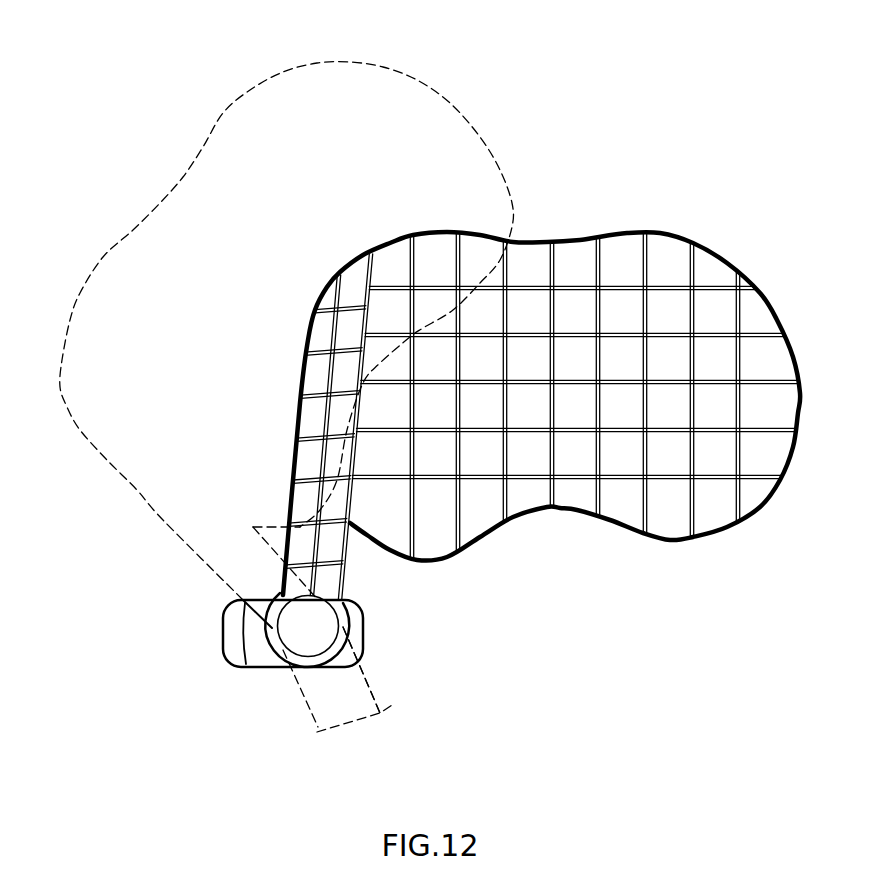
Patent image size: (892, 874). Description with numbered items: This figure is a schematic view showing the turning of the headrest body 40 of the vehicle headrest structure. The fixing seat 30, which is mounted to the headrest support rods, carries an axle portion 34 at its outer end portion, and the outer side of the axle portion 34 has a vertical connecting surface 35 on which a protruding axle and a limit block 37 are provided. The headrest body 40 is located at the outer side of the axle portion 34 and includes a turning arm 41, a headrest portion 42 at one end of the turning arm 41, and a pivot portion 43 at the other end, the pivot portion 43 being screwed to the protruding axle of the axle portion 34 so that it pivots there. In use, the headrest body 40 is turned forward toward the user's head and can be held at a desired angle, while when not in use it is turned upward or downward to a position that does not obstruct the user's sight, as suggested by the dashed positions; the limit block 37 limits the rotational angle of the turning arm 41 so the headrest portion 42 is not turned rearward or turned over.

The headrest body 40 is at (685, 210).
The headrest portion 42 is at (450, 98).
The turning arm 41 is at (227, 583).
The fixing seat 30 is at (232, 630).
The connecting surface 35 is at (363, 632).
The pivot portion 43 is at (280, 667).
The limit block 37 is at (245, 657).
The axle portion 34 is at (370, 668).